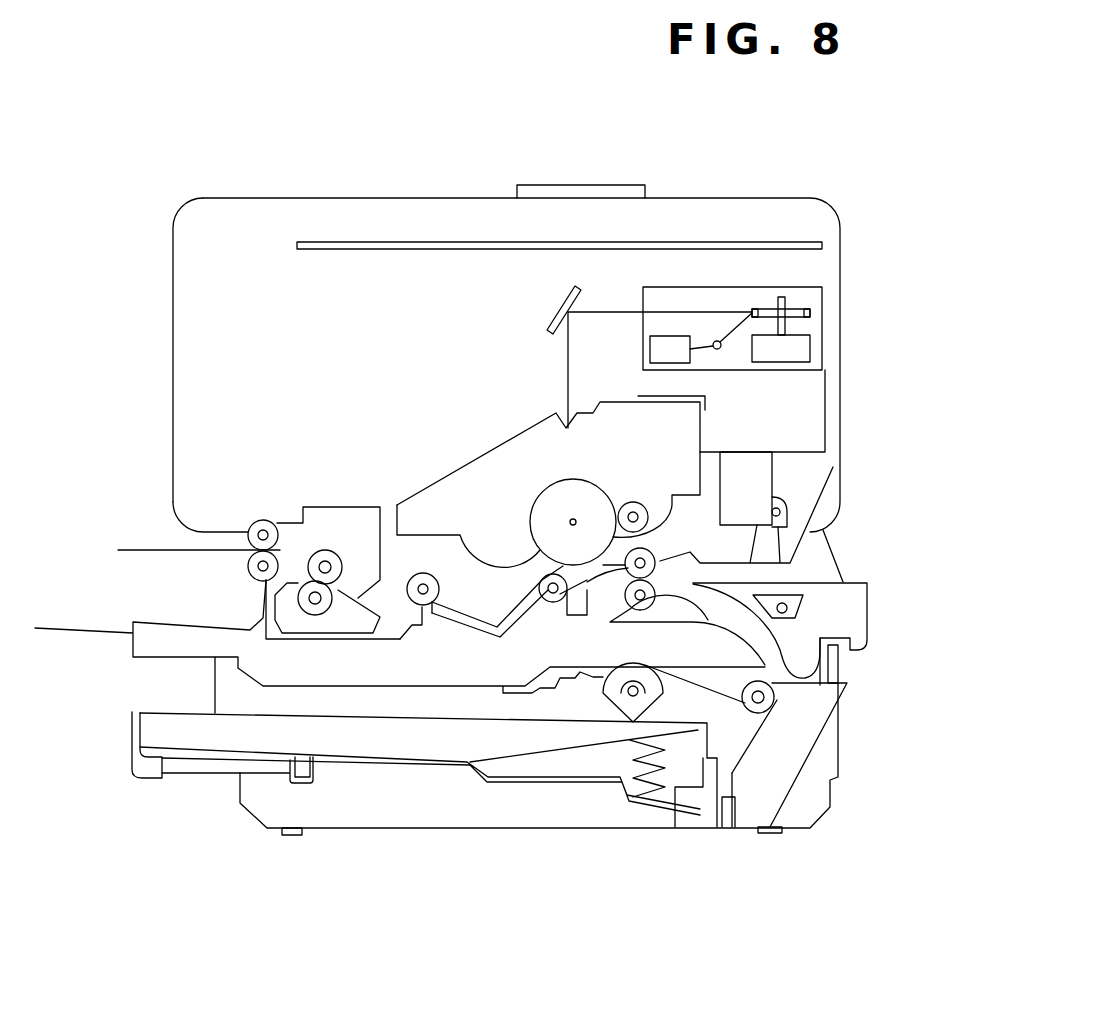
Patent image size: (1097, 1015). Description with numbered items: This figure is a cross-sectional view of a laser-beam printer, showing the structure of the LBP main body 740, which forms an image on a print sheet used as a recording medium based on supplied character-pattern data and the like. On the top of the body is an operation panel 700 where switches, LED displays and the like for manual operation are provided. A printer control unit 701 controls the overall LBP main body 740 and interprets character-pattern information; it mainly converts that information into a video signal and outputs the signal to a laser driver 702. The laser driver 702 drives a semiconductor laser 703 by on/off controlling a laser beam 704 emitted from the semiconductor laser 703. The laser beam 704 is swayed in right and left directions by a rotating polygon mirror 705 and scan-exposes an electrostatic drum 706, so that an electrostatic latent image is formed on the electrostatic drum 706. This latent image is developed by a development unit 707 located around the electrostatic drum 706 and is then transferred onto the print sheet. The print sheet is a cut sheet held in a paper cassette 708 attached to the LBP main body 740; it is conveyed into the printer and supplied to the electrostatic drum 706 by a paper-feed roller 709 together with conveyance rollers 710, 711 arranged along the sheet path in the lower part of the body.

The operation panel 700 is at (566, 187).
The LBP main body 740 is at (725, 198).
The printer control unit 701 is at (800, 237).
The laser driver 702 is at (650, 351).
The semiconductor laser 703 is at (717, 350).
The laser beam 704 is at (686, 312).
The rotating polygon mirror 705 is at (810, 307).
The electrostatic drum 706 is at (543, 492).
The development unit 707 is at (440, 485).
The paper cassette 708 is at (136, 760).
The paper-feed roller 709 is at (622, 712).
The conveyance roller 710 is at (773, 702).
The conveyance roller 711 is at (633, 617).